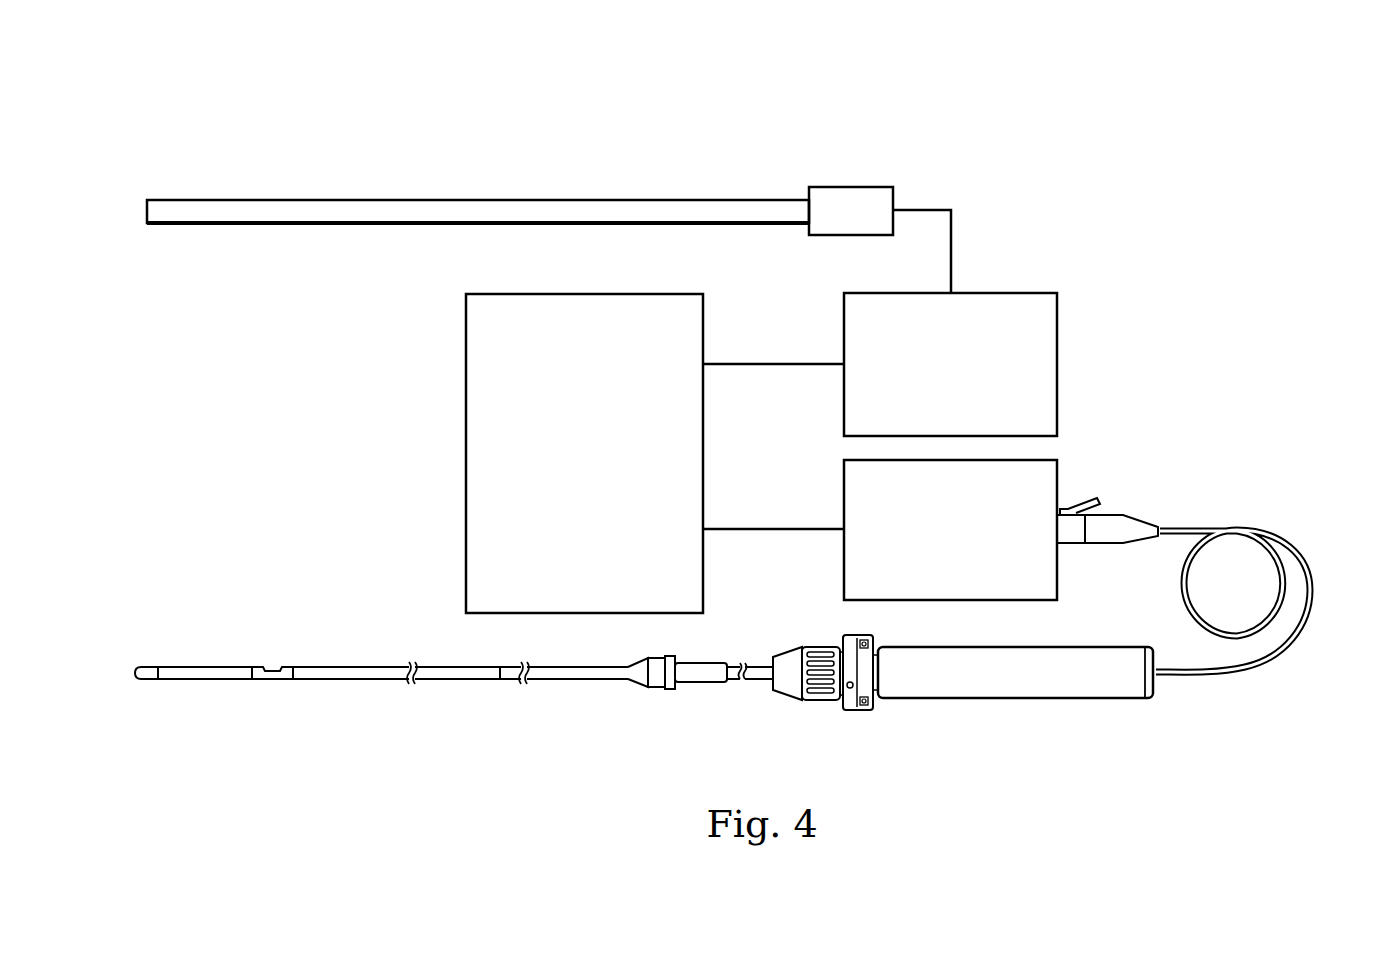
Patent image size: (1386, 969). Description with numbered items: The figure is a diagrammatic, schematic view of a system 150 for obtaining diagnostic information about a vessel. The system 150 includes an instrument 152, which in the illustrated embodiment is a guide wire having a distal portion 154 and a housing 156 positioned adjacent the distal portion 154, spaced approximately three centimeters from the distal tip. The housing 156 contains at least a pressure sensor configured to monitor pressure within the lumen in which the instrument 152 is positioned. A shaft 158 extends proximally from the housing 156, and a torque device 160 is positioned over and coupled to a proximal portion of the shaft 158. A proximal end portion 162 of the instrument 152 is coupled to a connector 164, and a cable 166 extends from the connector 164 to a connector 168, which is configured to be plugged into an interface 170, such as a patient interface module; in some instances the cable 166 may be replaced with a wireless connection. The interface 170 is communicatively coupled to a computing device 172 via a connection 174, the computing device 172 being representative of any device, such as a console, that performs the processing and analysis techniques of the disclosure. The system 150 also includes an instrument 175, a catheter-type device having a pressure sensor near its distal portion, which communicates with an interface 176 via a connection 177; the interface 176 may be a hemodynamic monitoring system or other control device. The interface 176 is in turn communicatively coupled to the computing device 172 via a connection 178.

The system 150 is at (1075, 115).
The instrument 152 is at (373, 684).
The distal portion 154 is at (150, 660).
The housing 156 is at (272, 683).
The shaft 158 is at (352, 662).
The torque device 160 is at (700, 703).
The proximal end portion 162 is at (757, 665).
The connector 164 is at (1085, 715).
The cable 166 is at (1312, 597).
The connector 168 is at (1115, 512).
The interface 170 is at (1058, 568).
The computing device 172 is at (464, 452).
The connection 174 is at (776, 528).
The instrument 175 is at (480, 175).
The interface 176 is at (1059, 360).
The connection 177 is at (952, 250).
The connection 178 is at (776, 362).